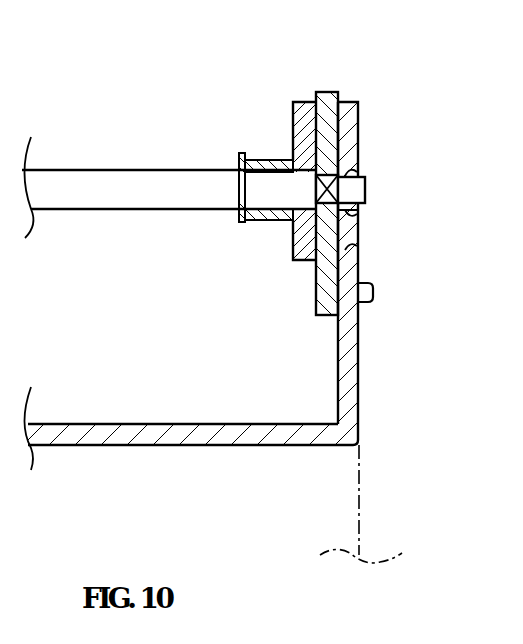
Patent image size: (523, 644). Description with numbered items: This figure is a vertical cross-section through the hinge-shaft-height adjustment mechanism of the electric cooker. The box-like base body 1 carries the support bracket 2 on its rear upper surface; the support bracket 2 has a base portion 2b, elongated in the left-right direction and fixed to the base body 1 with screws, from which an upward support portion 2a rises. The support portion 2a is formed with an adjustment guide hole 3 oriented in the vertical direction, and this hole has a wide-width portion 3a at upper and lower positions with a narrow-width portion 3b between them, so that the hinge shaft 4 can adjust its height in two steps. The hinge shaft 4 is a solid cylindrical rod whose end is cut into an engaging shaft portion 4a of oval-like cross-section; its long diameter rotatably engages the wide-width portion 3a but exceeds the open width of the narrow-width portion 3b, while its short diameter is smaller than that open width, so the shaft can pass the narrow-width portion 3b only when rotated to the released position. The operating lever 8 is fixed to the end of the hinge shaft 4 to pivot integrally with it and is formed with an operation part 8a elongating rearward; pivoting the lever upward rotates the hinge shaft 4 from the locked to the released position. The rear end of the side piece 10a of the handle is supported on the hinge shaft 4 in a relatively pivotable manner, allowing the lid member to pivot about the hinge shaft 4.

The base body 1 is at (374, 518).
The support bracket 2 is at (240, 286).
The support portion 2a is at (358, 342).
The base portion 2b is at (140, 424).
The adjustment guide hole 3 is at (399, 195).
The wide-width portion 3a is at (360, 173).
The narrow-width portion 3b is at (362, 223).
The hinge shaft 4 is at (138, 170).
The engaging shaft portion 4a is at (365, 190).
The operating lever 8 is at (328, 91).
The operation part 8a is at (373, 293).
The side piece 10a is at (308, 103).